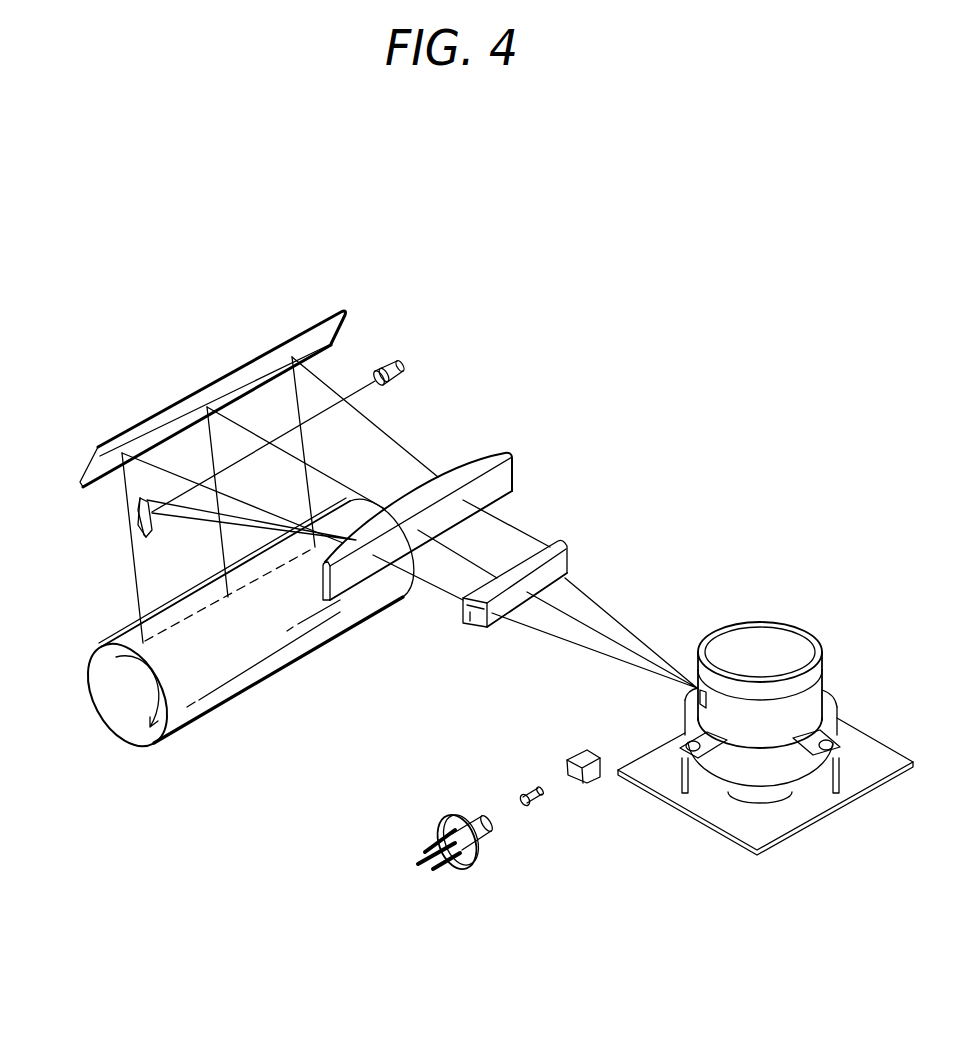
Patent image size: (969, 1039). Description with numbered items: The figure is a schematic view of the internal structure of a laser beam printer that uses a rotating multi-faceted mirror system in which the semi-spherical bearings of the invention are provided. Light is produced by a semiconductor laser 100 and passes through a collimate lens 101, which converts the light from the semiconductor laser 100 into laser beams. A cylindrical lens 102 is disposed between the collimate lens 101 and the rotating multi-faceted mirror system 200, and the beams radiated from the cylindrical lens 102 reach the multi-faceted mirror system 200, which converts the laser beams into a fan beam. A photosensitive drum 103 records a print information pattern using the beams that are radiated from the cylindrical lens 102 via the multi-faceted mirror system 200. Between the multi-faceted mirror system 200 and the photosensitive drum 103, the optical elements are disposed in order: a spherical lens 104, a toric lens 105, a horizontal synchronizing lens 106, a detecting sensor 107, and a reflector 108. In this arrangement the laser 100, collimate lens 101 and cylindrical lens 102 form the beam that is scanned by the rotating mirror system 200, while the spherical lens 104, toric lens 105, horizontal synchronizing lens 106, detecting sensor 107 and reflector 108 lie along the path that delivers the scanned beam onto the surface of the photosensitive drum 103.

The semiconductor laser 100 is at (488, 829).
The collimate lens 101 is at (538, 804).
The cylindrical lens 102 is at (594, 770).
The photosensitive drum 103 is at (127, 703).
The spherical lens 104 is at (562, 541).
The toric lens 105 is at (488, 448).
The horizontal synchronizing lens 106 is at (138, 515).
The detecting sensor 107 is at (398, 367).
The reflector 108 is at (323, 318).
The rotating multi-faceted mirror system 200 is at (786, 618).